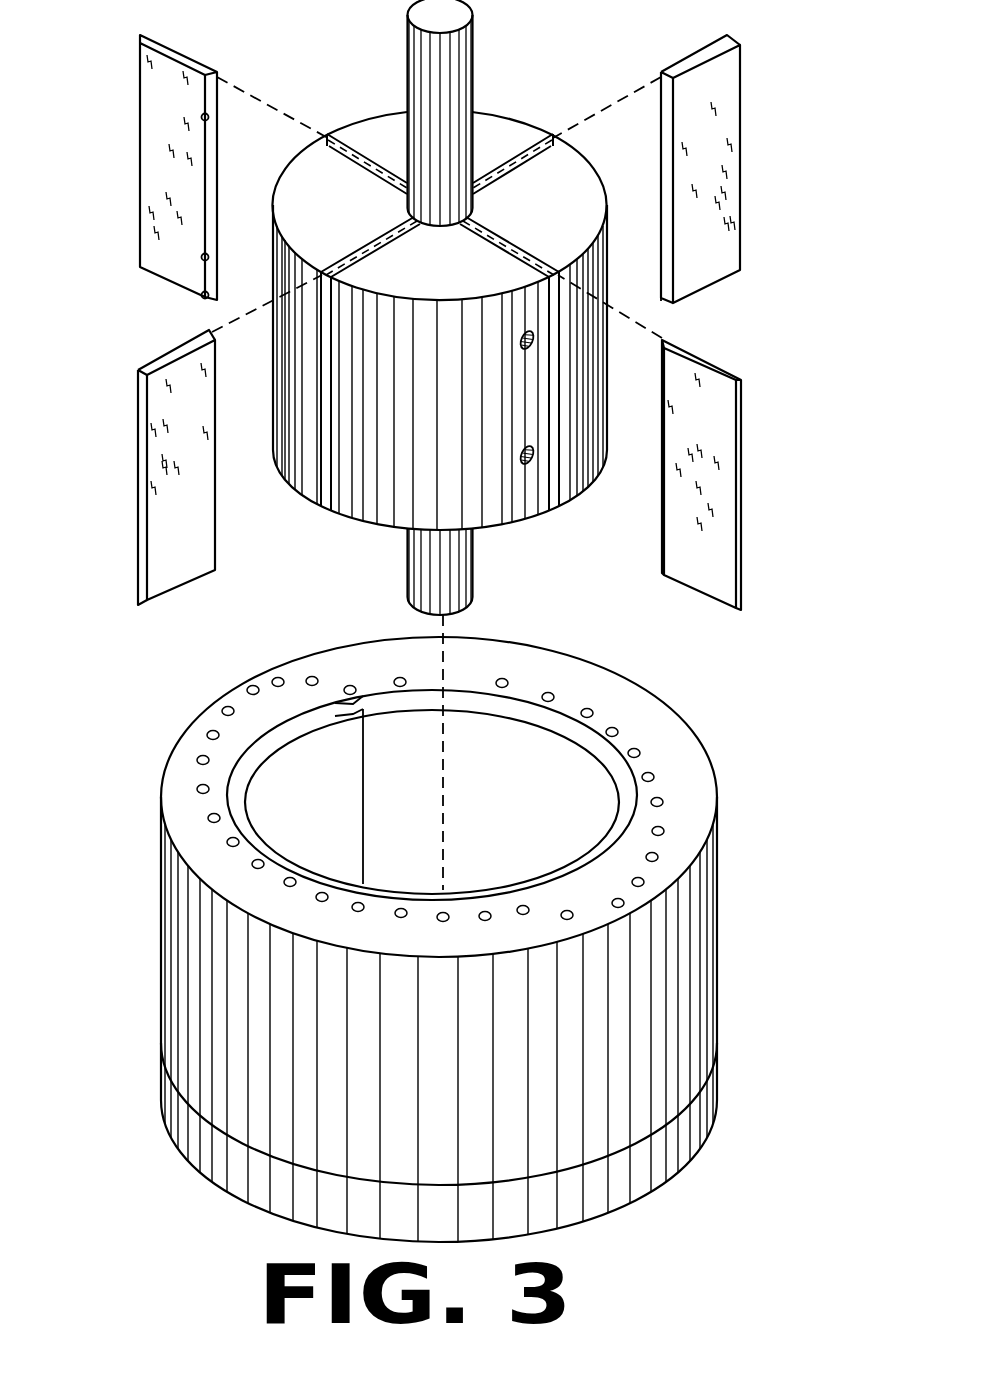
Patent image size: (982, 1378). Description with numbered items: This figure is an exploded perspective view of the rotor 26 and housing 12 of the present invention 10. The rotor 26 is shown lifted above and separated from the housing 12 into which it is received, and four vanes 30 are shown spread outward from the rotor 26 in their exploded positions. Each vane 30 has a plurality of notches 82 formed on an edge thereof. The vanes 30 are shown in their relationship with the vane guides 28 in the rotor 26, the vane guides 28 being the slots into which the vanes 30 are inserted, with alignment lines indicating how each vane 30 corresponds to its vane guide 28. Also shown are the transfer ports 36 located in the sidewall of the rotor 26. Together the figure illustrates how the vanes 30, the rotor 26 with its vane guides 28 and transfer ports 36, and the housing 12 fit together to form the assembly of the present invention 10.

The present invention 10 is at (778, 120).
The housing 12 is at (160, 977).
The rotor 26 is at (370, 522).
The vane guides 28 is at (377, 233).
The vanes 30 is at (180, 352).
The transfer ports 36 is at (522, 465).
The notches 82 is at (205, 257).